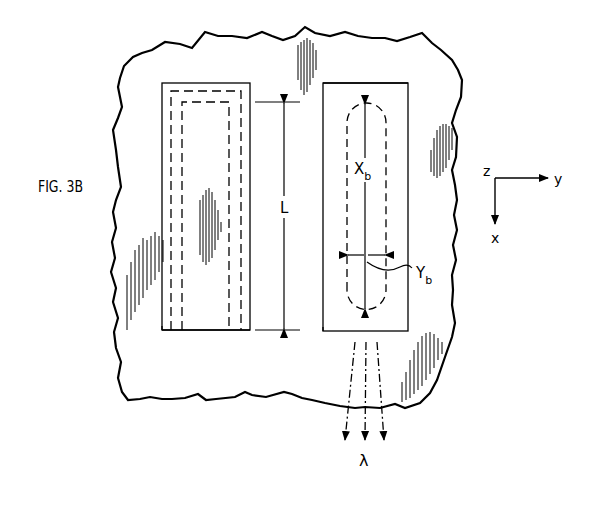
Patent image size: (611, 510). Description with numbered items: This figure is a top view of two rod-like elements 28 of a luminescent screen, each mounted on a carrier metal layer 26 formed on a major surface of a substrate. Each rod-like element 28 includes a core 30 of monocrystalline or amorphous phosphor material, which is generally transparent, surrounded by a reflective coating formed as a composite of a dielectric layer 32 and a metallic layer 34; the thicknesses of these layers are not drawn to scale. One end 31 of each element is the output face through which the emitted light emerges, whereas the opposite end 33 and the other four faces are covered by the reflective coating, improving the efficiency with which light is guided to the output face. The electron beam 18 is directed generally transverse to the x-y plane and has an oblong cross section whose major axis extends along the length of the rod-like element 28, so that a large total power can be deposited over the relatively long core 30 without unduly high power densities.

The electron beam 18 is at (387, 205).
The metal layer 26 is at (428, 320).
The rod-like element 28 is at (388, 100).
The core 30 is at (203, 136).
The output face 31 is at (208, 331).
The dielectric layer 32 is at (180, 227).
The opposite end 33 is at (210, 83).
The metallic layer 34 is at (165, 331).